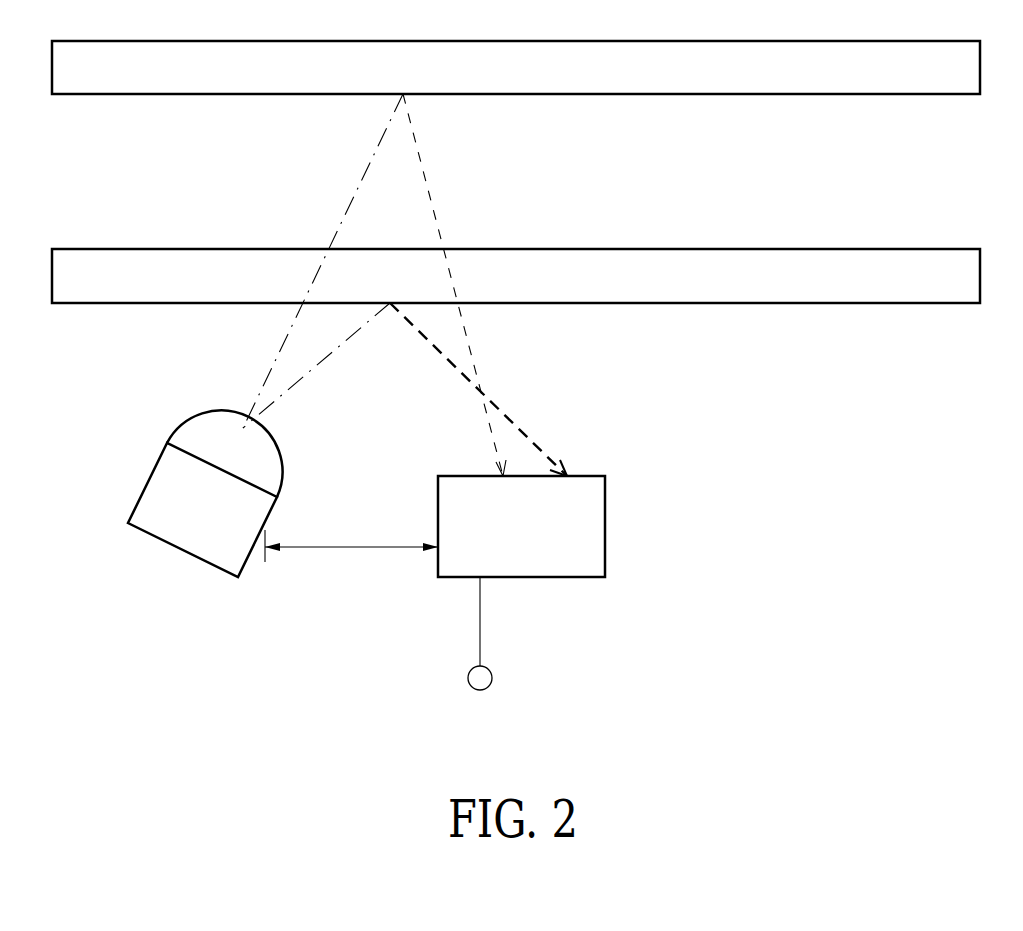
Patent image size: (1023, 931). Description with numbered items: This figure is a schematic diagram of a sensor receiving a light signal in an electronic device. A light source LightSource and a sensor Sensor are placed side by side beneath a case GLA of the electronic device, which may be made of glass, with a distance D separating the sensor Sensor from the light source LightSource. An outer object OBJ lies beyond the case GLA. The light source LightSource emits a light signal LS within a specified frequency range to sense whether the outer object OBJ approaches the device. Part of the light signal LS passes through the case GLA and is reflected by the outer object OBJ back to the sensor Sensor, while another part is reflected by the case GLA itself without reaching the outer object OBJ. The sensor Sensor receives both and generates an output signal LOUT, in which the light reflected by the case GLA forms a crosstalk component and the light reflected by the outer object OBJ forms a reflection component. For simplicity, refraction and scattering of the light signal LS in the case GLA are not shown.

The outer object OBJ is at (516, 67).
The case GLA is at (516, 276).
The light signal LS is at (316, 265).
The distance D is at (351, 537).
The output signal LOUT is at (457, 602).
The light source LightSource is at (205, 493).
The sensor Sensor is at (521, 526).